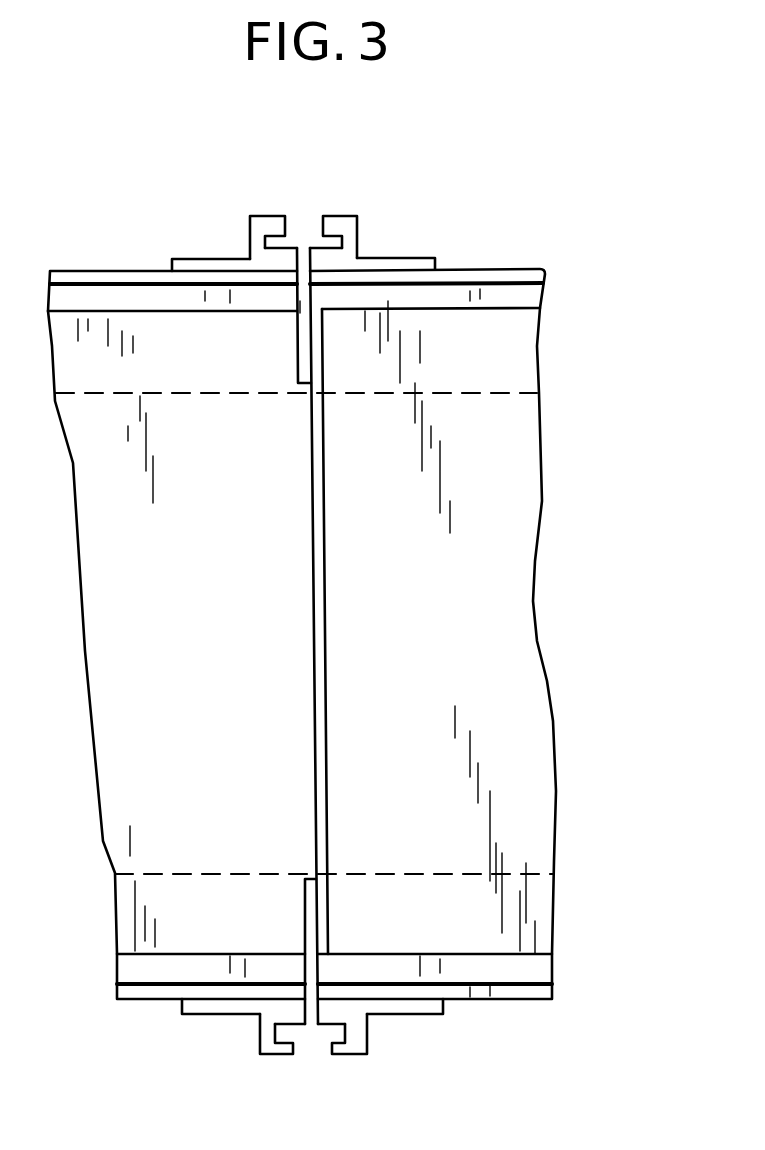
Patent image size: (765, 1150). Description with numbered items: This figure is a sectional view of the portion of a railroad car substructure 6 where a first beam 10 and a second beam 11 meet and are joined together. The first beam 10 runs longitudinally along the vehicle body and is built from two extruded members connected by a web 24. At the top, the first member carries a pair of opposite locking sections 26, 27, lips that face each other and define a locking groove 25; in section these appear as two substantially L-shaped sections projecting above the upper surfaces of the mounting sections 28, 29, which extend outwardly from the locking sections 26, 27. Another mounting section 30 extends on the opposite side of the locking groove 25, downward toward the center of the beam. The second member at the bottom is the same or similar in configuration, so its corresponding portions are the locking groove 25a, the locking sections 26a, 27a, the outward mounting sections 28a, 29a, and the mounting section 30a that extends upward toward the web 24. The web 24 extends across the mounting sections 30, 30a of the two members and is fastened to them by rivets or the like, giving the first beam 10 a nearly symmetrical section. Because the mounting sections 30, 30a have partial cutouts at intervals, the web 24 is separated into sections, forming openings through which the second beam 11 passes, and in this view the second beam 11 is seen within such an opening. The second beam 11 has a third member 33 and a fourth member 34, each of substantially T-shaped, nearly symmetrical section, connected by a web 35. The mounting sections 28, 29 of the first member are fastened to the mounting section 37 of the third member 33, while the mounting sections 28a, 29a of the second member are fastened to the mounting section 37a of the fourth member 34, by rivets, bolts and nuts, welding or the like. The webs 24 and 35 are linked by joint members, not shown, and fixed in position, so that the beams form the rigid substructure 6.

The substructure 6 is at (92, 185).
The first beam 10 is at (363, 147).
The second beam 11 is at (556, 505).
The web 24 is at (312, 548).
The locking groove 25 is at (303, 225).
The locking groove 25a is at (306, 1036).
The locking section 26 is at (267, 223).
The locking section 26a is at (353, 1054).
The locking section 27 is at (340, 223).
The locking section 27a is at (277, 1054).
The mounting section 28 is at (194, 260).
The mounting section 28a is at (436, 1010).
The mounting section 29 is at (420, 257).
The mounting section 29a is at (191, 1013).
The mounting section 30 is at (300, 352).
The mounting section 30a is at (312, 925).
The third member 33 is at (520, 355).
The fourth member 34 is at (530, 915).
The web 35 is at (500, 646).
The mounting section 37 is at (525, 270).
The mounting section 37a is at (532, 993).